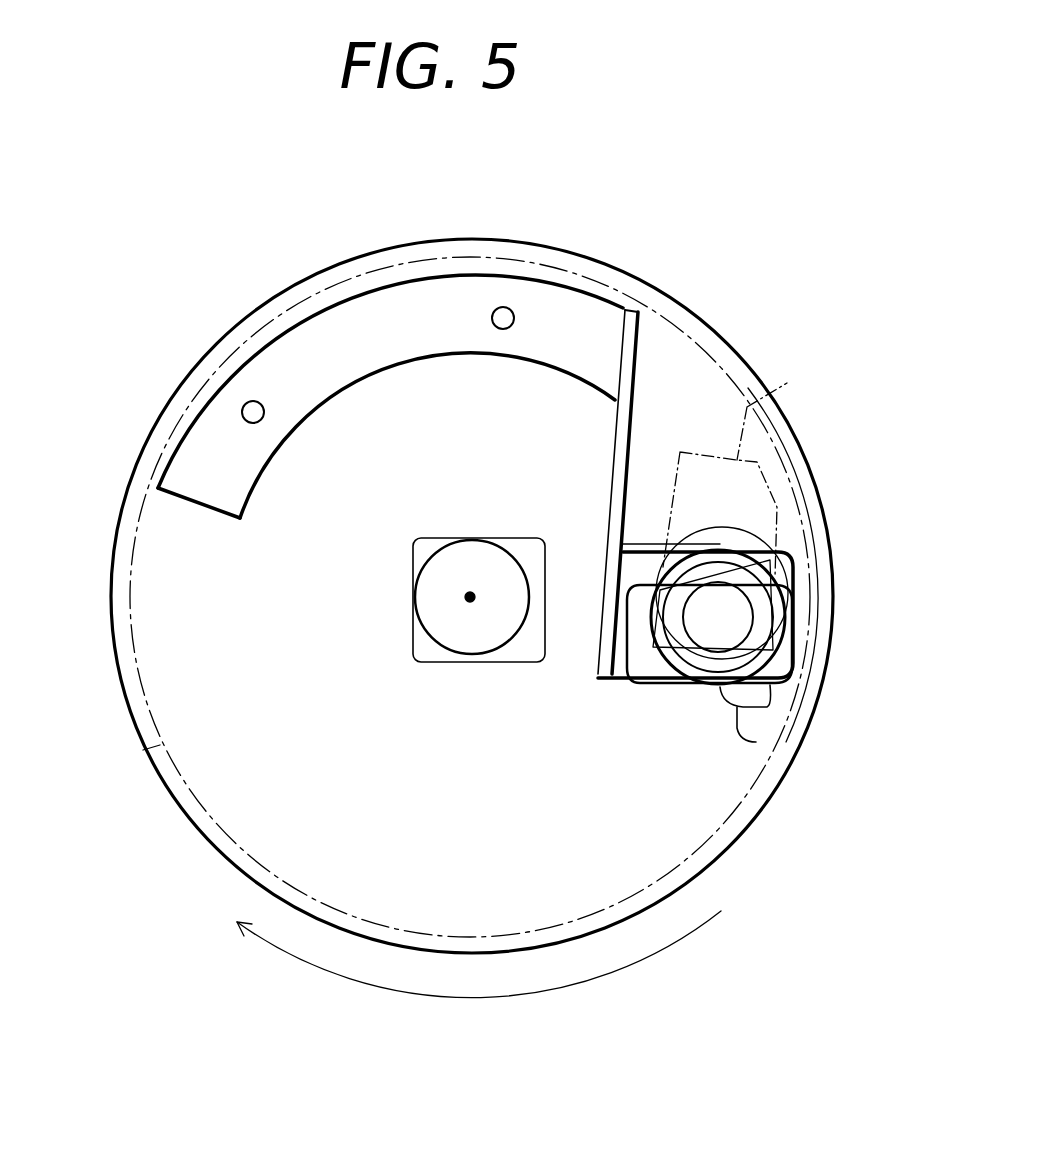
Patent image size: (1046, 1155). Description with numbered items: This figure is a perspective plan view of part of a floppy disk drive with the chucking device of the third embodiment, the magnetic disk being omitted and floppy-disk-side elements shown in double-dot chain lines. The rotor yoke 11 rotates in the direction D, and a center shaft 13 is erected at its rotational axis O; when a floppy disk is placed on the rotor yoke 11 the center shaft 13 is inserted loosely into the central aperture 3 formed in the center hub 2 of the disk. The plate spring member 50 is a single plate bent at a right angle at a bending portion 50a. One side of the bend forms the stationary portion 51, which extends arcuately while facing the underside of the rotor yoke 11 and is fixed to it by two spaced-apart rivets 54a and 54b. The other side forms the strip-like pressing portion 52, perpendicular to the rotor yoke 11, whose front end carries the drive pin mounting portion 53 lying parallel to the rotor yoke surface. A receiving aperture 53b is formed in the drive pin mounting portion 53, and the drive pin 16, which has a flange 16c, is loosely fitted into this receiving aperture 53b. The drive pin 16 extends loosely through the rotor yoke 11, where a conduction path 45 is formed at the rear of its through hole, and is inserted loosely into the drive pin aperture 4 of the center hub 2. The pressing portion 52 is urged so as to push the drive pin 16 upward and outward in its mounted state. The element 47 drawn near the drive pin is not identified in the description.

The center hub 2 is at (143, 750).
The rotor yoke 11 is at (118, 522).
The plate spring member 50 is at (585, 285).
The stationary portion 51 is at (393, 305).
The rivet 54a is at (253, 401).
The rivet 54b is at (503, 307).
The bending portion 50a is at (636, 353).
The pressing portion 52 is at (613, 455).
The drive pin mounting portion 53 is at (620, 683).
The drive pin aperture 4 is at (745, 405).
The conduction path 45 is at (778, 550).
The drive pin 16 is at (740, 600).
The receiving aperture 53b is at (770, 625).
The flange 16c is at (775, 690).
The support 47 is at (790, 745).
The central aperture 3 is at (413, 630).
The center shaft 13 is at (443, 647).
The rotational axis O is at (466, 594).
The direction of rotation D is at (461, 946).